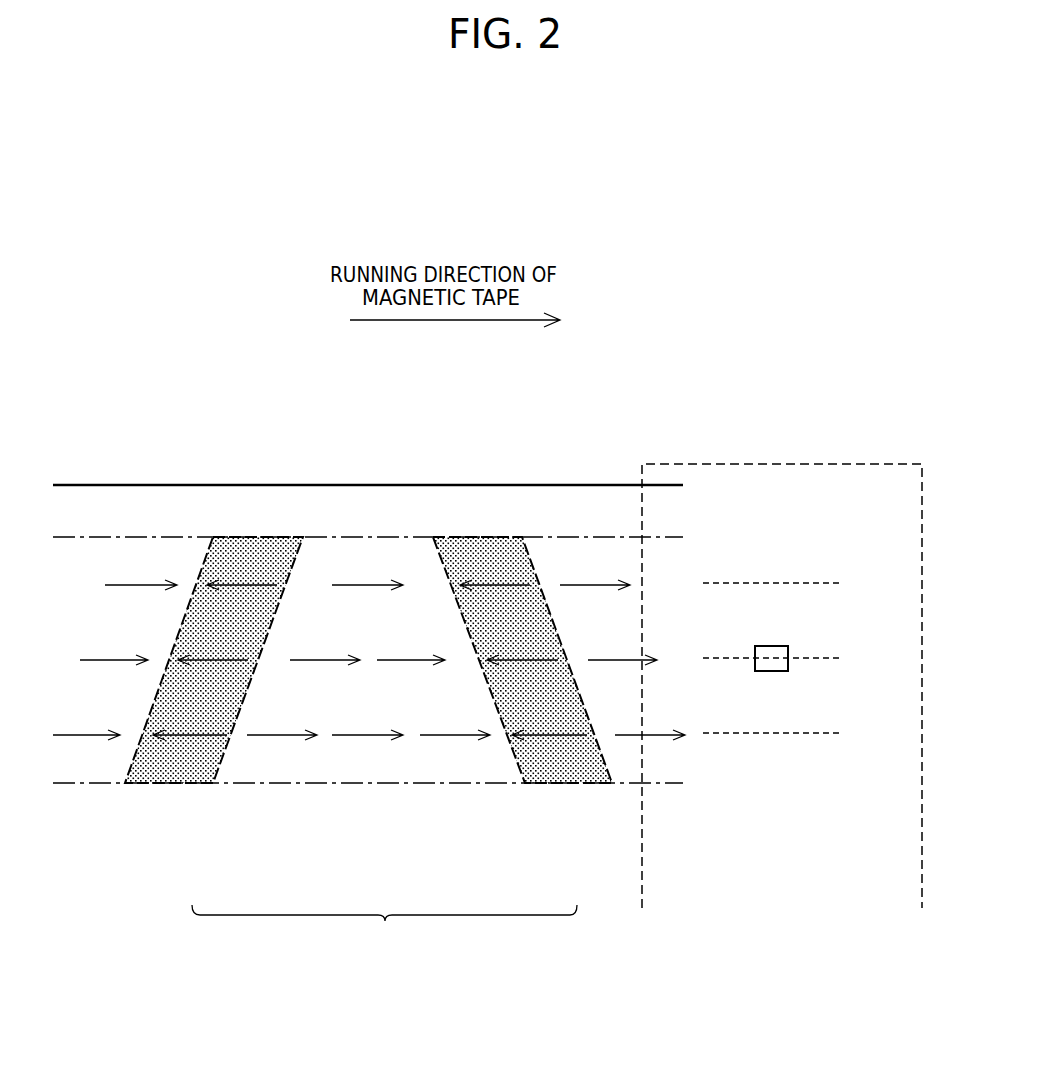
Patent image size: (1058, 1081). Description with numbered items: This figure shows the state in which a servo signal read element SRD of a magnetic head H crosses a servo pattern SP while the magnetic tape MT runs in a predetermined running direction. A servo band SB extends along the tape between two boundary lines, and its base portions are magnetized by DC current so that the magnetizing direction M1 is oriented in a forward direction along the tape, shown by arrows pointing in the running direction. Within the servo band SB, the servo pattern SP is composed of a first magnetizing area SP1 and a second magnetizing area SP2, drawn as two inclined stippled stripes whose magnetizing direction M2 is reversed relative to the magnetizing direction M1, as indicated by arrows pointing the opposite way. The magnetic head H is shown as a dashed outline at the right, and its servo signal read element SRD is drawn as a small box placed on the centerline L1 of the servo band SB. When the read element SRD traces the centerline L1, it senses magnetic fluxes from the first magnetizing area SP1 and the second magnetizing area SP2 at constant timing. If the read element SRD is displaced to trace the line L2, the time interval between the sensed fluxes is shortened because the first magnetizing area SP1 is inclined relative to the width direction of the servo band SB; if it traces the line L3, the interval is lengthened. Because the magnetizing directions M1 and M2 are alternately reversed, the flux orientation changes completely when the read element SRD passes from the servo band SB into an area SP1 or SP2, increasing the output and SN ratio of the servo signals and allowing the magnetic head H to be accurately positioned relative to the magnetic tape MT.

The magnetic tape MT is at (130, 485).
The servo band SB is at (609, 537).
The magnetic head H is at (748, 464).
The magnetizing direction M1 is at (343, 585).
The magnetizing direction M2 is at (497, 585).
The first magnetizing area SP1 is at (232, 737).
The second magnetizing area SP2 is at (512, 748).
The servo pattern SP is at (384, 929).
The servo signal read element SRD is at (772, 646).
The centerline L1 is at (791, 660).
The line L2 is at (791, 585).
The line L3 is at (791, 735).